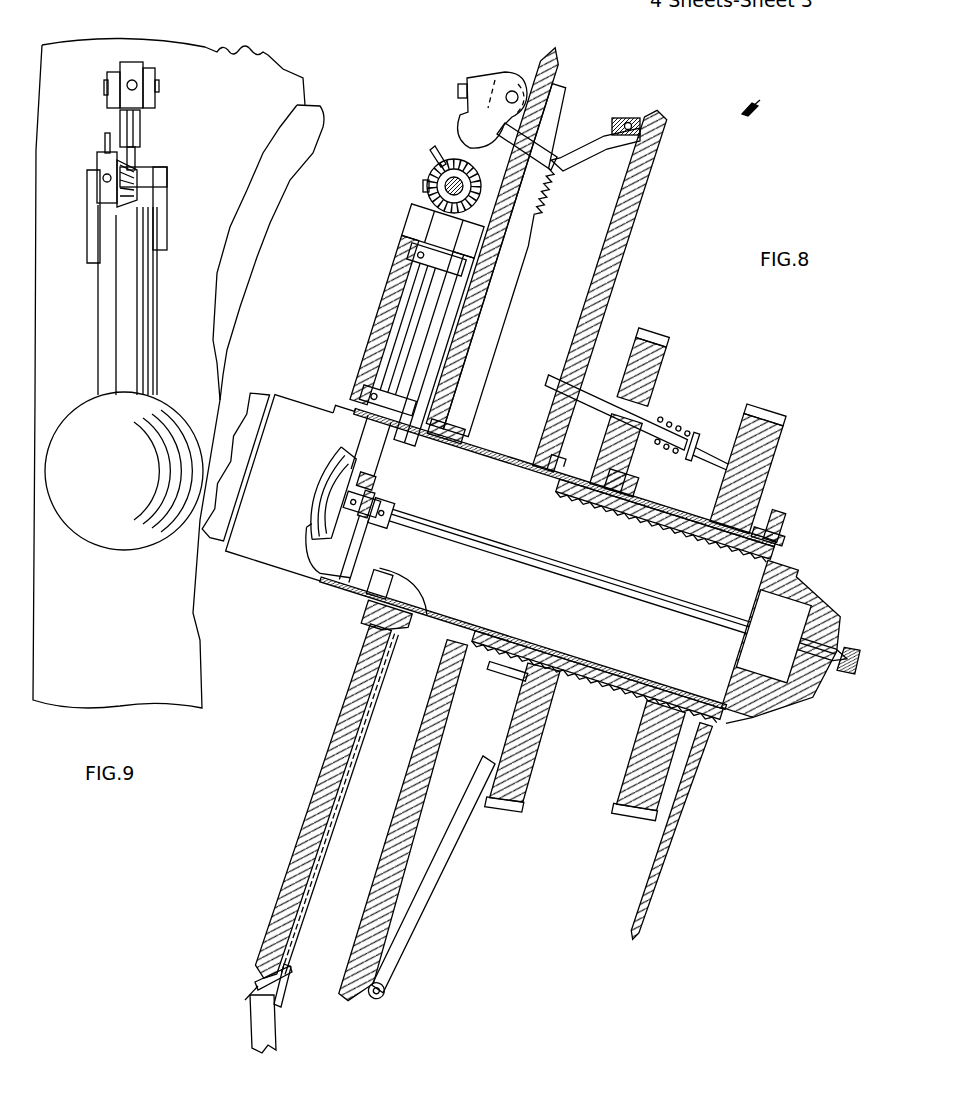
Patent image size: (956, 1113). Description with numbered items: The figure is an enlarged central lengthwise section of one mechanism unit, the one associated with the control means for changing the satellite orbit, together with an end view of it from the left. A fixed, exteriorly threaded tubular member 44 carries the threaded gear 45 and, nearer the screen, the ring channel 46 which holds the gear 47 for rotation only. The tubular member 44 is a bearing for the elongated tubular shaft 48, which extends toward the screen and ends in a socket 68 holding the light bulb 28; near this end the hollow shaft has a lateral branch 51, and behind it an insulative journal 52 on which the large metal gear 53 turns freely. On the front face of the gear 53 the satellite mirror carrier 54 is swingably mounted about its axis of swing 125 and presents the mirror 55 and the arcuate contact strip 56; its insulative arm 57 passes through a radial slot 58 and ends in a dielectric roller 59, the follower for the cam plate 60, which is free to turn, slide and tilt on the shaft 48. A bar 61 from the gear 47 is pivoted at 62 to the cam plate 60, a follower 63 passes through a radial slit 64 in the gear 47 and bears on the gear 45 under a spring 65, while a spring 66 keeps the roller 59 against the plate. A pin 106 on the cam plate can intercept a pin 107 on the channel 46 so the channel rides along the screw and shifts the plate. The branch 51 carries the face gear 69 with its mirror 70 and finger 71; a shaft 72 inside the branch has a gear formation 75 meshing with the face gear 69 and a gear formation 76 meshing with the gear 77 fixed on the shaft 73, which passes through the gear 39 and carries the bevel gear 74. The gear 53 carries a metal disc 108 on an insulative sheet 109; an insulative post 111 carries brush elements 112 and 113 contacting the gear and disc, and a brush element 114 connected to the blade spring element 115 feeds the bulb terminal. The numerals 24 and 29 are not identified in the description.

In FIG. 8, the retaining ring 24 is at (782, 520).
In FIG. 8, the light bulb 28 is at (258, 400).
In FIG. 9, the light bulb 28 is at (86, 402).
In FIG. 8, the arrow indicator 29 is at (750, 117).
In FIG. 8, the gear 39 is at (809, 700).
In FIG. 8, the tubular member 44 is at (610, 694).
In FIG. 8, the gear 45 is at (770, 455).
In FIG. 8, the ring channel 46 is at (636, 492).
In FIG. 8, the gear 47 is at (530, 760).
In FIG. 8, the tubular shaft 48 is at (290, 574).
In FIG. 8, the branch 51 is at (385, 317).
In FIG. 9, the branch 51 is at (98, 318).
In FIG. 8, the journal 52 is at (470, 432).
In FIG. 8, the gear 53 is at (319, 757).
In FIG. 8, the satellite mirror carrier 54 is at (476, 84).
In FIG. 9, the satellite mirror carrier 54 is at (140, 66).
In FIG. 8, the mirror 55 is at (457, 91).
In FIG. 9, the mirror 55 is at (108, 79).
In FIG. 8, the contact strip 56 is at (500, 148).
In FIG. 9, the contact strip 56 is at (141, 127).
In FIG. 8, the arm 57 is at (583, 156).
In FIG. 8, the radial slot 58 is at (552, 116).
In FIG. 9, the radial slot 58 is at (288, 98).
In FIG. 8, the roller 59 is at (613, 119).
In FIG. 8, the cam plate 60 is at (640, 162).
In FIG. 9, the cam plate 60 is at (298, 150).
In FIG. 8, the bar 61 is at (445, 858).
In FIG. 8, the pivot 62 is at (380, 996).
In FIG. 8, the follower 63 is at (600, 394).
In FIG. 8, the radial slit 64 is at (655, 384).
In FIG. 8, the spring 65 is at (672, 414).
In FIG. 8, the spring 66 is at (548, 190).
In FIG. 8, the socket 68 is at (320, 463).
In FIG. 8, the face gear 69 is at (468, 208).
In FIG. 9, the face gear 69 is at (95, 198).
In FIG. 8, the mirror 70 is at (426, 187).
In FIG. 9, the mirror 70 is at (97, 160).
In FIG. 8, the finger 71 is at (428, 156).
In FIG. 9, the finger 71 is at (104, 137).
In FIG. 8, the shaft 72 is at (372, 352).
In FIG. 8, the shaft 73 is at (504, 547).
In FIG. 8, the bevel gear 74 is at (848, 672).
In FIG. 8, the gear formation 75 is at (413, 232).
In FIG. 8, the gear formation 76 is at (360, 458).
In FIG. 8, the gear 77 is at (380, 482).
In FIG. 8, the pin 106 is at (564, 454).
In FIG. 8, the pin 107 is at (500, 680).
In FIG. 8, the disc 108 is at (377, 729).
In FIG. 8, the insulative sheet 109 is at (377, 714).
In FIG. 8, the post 111 is at (263, 1053).
In FIG. 8, the brush element 112 is at (255, 977).
In FIG. 8, the brush element 113 is at (290, 991).
In FIG. 8, the brush element 114 is at (412, 636).
In FIG. 8, the blade spring element 115 is at (325, 557).
In FIG. 8, the axis of swing 125 is at (512, 90).
In FIG. 9, the axis of swing 125 is at (160, 86).